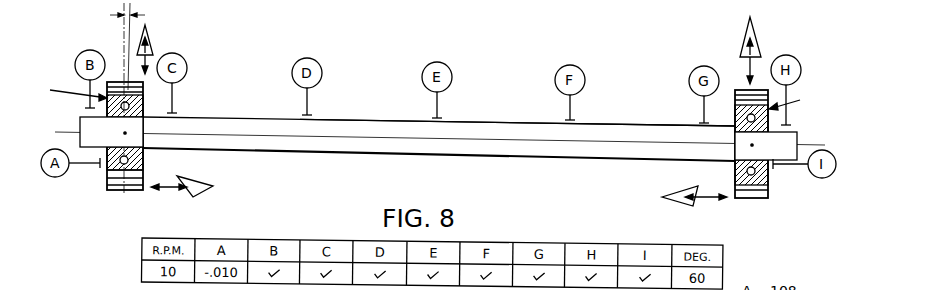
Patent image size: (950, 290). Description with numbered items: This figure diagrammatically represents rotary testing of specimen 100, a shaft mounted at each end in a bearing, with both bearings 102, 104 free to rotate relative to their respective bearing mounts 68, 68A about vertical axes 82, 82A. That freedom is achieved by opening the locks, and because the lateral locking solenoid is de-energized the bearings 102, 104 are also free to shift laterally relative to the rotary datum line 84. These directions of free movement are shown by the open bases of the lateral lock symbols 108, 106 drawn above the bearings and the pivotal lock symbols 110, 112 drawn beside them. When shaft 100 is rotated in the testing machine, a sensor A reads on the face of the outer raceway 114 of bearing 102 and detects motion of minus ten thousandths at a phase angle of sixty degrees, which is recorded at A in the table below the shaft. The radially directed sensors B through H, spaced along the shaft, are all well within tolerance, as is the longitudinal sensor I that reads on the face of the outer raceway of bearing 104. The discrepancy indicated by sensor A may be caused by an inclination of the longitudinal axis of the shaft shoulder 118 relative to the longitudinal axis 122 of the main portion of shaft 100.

The bearing mount 68 is at (105, 192).
The bearing mount 68A is at (756, 202).
The vertical axis 82 is at (126, 133).
The vertical axis 82A is at (752, 145).
The rotary datum line 84 is at (267, 138).
The specimen 100 is at (510, 122).
The bearing 102 is at (64, 91).
The bearing 104 is at (799, 101).
The lateral lock symbol 106 is at (155, 40).
The lateral lock symbol 108 is at (758, 32).
The pivotal lock symbol 110 is at (197, 192).
The pivotal lock symbol 112 is at (687, 205).
The outer raceway 114 is at (102, 170).
The shaft shoulder 118 is at (95, 127).
The longitudinal axis 122 is at (332, 137).